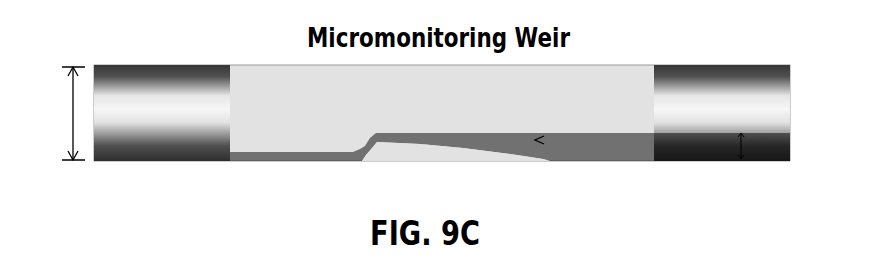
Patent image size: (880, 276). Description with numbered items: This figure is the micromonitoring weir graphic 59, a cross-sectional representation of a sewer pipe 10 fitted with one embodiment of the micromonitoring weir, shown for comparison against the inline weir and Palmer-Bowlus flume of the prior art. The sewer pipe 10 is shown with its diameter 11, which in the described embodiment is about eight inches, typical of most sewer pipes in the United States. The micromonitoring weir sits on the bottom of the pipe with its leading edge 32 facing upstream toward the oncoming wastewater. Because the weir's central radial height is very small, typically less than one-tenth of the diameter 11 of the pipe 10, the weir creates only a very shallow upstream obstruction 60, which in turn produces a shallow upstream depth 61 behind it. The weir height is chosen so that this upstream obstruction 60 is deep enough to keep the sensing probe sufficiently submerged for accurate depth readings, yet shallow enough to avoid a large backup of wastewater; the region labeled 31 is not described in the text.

The sewer pipe 10 is at (184, 109).
The diameter 11 is at (73, 110).
The micromonitoring weir graphic 59 is at (250, 45).
The lower fluid layer 31 is at (412, 153).
The leading edge 32 is at (550, 157).
The upstream obstruction 60 is at (535, 140).
The upstream depth 61 is at (743, 145).